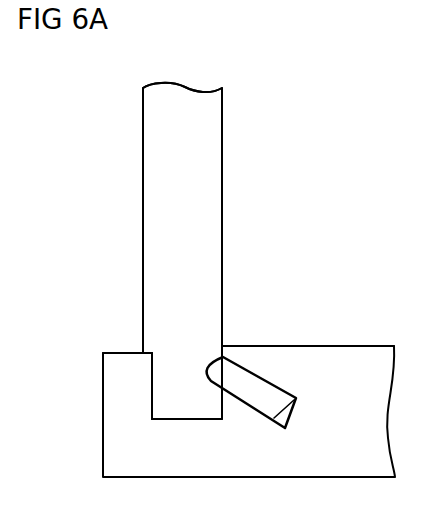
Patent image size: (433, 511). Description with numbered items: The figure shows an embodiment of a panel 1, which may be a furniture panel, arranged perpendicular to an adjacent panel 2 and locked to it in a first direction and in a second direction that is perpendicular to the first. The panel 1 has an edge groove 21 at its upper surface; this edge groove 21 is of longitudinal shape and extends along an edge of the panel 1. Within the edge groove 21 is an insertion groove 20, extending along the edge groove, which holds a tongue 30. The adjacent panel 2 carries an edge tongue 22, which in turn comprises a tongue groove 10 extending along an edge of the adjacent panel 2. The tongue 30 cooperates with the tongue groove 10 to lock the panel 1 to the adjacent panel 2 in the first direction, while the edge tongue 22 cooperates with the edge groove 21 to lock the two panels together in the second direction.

The panel 1 is at (327, 398).
The adjacent panel 2 is at (187, 192).
The tongue groove 10 is at (205, 373).
The insertion groove 20 is at (290, 396).
The edge groove 21 is at (152, 392).
The edge tongue 22 is at (179, 387).
The tongue 30 is at (243, 381).